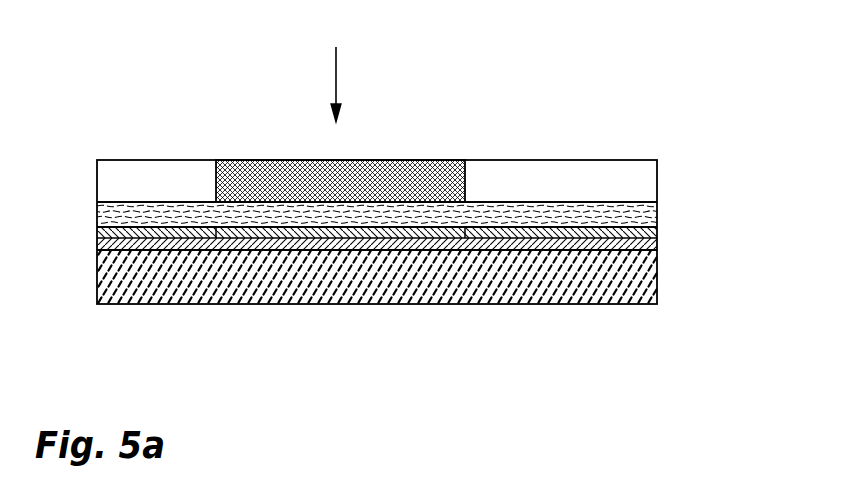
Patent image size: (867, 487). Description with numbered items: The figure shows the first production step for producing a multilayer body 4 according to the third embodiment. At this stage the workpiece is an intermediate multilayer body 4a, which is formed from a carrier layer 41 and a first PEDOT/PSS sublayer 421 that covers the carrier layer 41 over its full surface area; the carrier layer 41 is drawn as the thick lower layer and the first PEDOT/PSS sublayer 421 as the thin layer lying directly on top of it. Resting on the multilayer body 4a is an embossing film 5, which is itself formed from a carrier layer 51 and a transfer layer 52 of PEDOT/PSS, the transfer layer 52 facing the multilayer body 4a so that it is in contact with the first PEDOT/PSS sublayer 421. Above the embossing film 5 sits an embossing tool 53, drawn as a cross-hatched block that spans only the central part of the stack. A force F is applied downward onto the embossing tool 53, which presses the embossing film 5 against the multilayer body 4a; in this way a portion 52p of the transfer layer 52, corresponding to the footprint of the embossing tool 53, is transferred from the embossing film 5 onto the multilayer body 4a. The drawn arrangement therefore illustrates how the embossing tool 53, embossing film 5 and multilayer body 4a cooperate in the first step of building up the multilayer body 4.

The applied force F is at (341, 67).
The embossing film 5 is at (88, 200).
The embossing tool 53 is at (420, 160).
The carrier layer 51 is at (657, 202).
The transfer layer 52 is at (657, 228).
The first PEDOT/PSS sublayer 421 is at (657, 243).
The portion of the transfer layer 52p is at (397, 243).
The carrier layer 41 is at (643, 290).
The multilayer body 4a is at (92, 243).
The multilayer body 4 is at (712, 271).